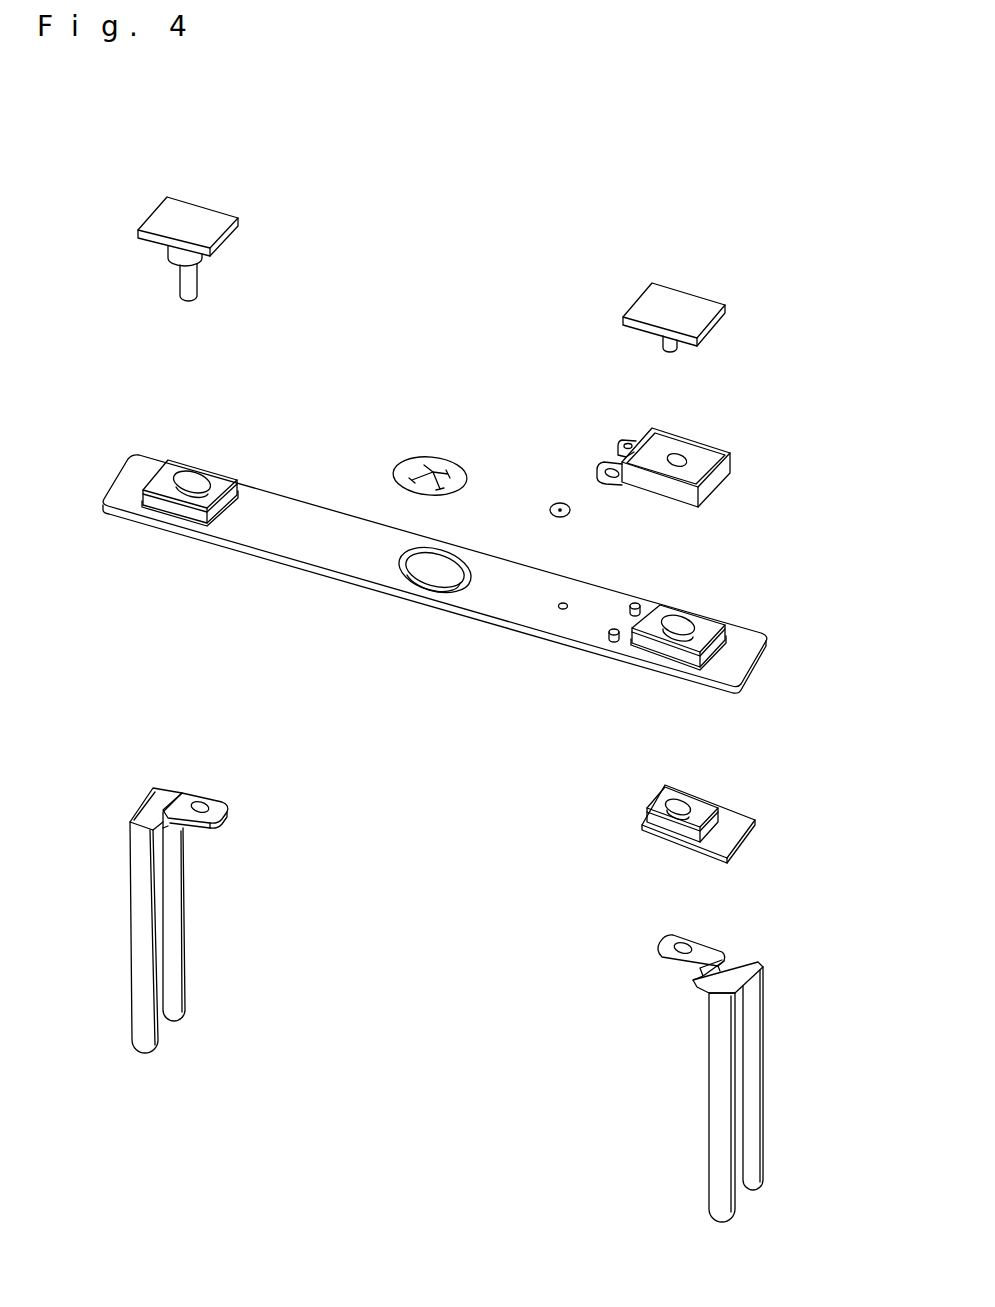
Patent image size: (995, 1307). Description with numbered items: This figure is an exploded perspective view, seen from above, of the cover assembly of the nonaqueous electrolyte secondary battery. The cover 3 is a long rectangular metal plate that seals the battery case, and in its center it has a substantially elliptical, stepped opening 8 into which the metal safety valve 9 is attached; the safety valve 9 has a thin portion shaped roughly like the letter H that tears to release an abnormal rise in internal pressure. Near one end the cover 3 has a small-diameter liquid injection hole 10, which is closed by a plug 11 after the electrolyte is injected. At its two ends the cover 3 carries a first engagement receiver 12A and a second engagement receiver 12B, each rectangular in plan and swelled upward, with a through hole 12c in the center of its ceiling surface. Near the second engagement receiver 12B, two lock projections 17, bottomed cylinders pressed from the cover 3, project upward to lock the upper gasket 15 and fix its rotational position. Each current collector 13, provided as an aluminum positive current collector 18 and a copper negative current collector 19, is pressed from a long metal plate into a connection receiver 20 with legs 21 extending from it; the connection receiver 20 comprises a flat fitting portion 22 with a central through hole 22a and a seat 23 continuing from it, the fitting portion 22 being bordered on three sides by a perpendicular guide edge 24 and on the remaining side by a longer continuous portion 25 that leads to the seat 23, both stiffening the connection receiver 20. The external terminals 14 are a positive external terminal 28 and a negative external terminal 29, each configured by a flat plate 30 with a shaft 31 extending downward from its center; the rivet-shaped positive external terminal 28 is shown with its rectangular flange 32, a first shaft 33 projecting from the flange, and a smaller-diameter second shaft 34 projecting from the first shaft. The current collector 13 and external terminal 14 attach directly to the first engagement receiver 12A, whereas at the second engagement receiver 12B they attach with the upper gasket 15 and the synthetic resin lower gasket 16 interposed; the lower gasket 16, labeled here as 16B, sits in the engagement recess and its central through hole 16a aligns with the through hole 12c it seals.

The cover 3 is at (320, 517).
The opening 8 is at (438, 563).
The safety valve 9 is at (438, 462).
The liquid injection hole 10 is at (563, 603).
The plug 11 is at (560, 503).
The first engagement receiver 12A is at (168, 473).
The second engagement receiver 12B is at (703, 622).
The through hole 12c is at (192, 478).
The current collector 13 is at (410, 972).
The external terminal 14 is at (431, 275).
The upper gasket 15 is at (732, 462).
The lower gasket 16 is at (611, 797).
The nut block 16B is at (653, 807).
The through hole 16a is at (682, 800).
The lock projections 17 is at (630, 608).
The positive current collector 18 is at (231, 888).
The negative current collector 19 is at (692, 1057).
The connection receiver 20 is at (225, 800).
The legs 21 is at (128, 900).
The fitting portion 22 is at (188, 792).
The through hole 22a is at (200, 802).
The seat 23 is at (150, 802).
The guide edge 24 is at (224, 820).
The continuous portion 25 is at (183, 832).
The positive external terminal 28 is at (292, 254).
The negative external terminal 29 is at (565, 318).
The flat plate 30 is at (633, 316).
The shaft 31 is at (663, 347).
The flange 32 is at (230, 222).
The first shaft 33 is at (202, 262).
The second shaft 34 is at (245, 288).